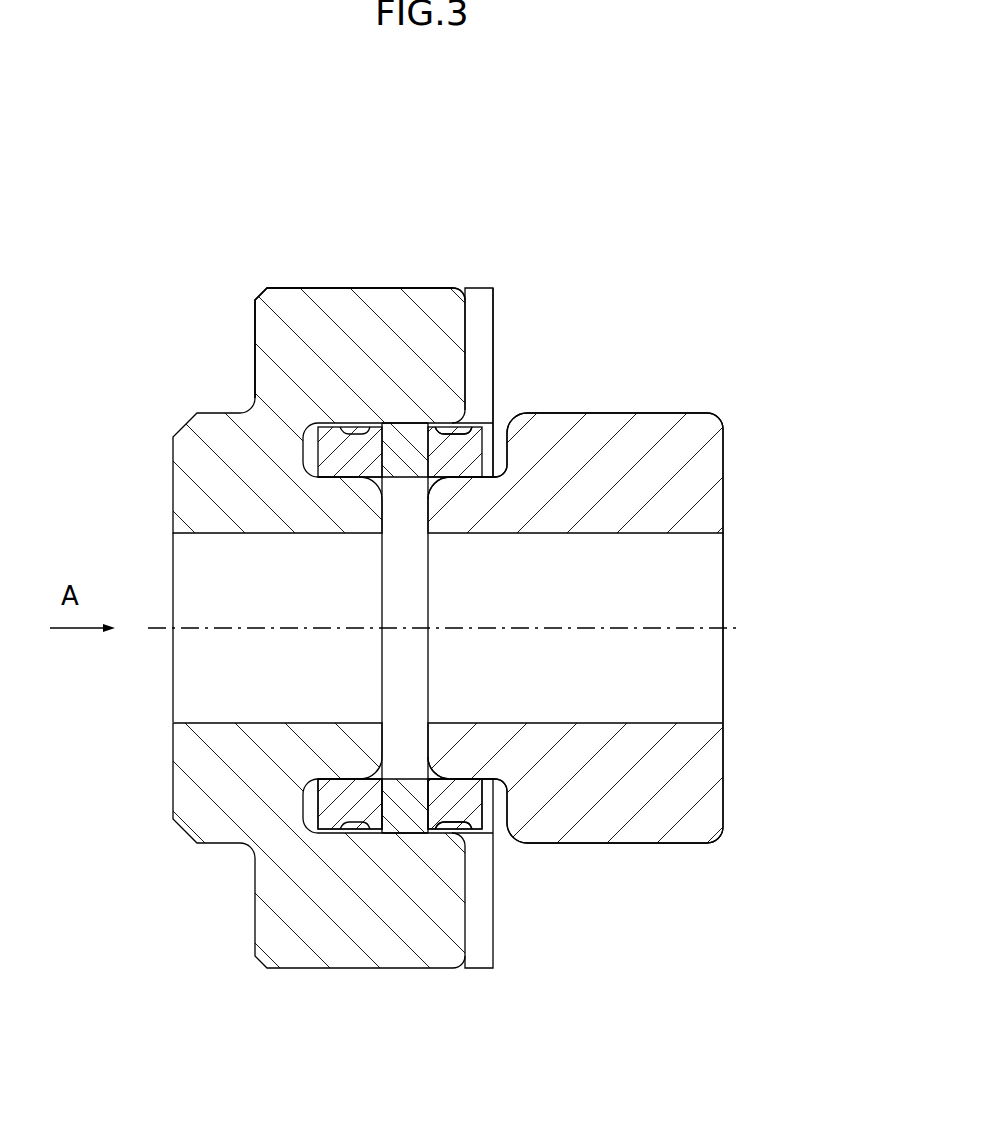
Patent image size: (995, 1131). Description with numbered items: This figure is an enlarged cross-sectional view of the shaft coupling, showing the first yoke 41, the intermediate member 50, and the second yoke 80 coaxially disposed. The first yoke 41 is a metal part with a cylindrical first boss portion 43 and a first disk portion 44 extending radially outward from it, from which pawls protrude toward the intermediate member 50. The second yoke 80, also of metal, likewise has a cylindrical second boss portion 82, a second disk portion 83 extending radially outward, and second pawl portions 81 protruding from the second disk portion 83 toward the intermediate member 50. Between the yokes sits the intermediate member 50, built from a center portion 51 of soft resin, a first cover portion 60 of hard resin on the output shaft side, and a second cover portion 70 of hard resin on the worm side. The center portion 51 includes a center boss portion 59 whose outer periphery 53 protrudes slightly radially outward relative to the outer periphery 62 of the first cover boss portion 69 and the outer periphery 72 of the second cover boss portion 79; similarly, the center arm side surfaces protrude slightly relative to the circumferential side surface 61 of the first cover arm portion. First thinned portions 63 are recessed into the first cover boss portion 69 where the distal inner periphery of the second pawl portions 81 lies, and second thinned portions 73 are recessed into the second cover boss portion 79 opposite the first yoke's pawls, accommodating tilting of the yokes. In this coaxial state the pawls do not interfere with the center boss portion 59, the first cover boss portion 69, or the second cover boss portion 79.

The first yoke 41 is at (637, 408).
The first boss portion 43 is at (477, 503).
The first disk portion 44 is at (682, 462).
The intermediate member 50 is at (480, 283).
The center portion 51 is at (403, 422).
The outer periphery of the center boss portion 53 is at (403, 835).
The center boss portion 59 is at (407, 800).
The first cover portion 60 is at (457, 422).
The circumferential side surface of the first cover arm portion 61 is at (478, 348).
The outer periphery of the first cover boss portion 62 is at (485, 831).
The first thinned portions 63 is at (450, 832).
The first cover boss portion 69 is at (465, 800).
The second cover portion 70 is at (350, 422).
The outer periphery of the second cover boss portion 72 is at (323, 835).
The second thinned portions 73 is at (367, 828).
The second cover boss portion 79 is at (353, 800).
The second yoke 80 is at (316, 283).
The second pawl portions 81 is at (320, 340).
The second boss portion 82 is at (337, 507).
The second disk portion 83 is at (270, 447).